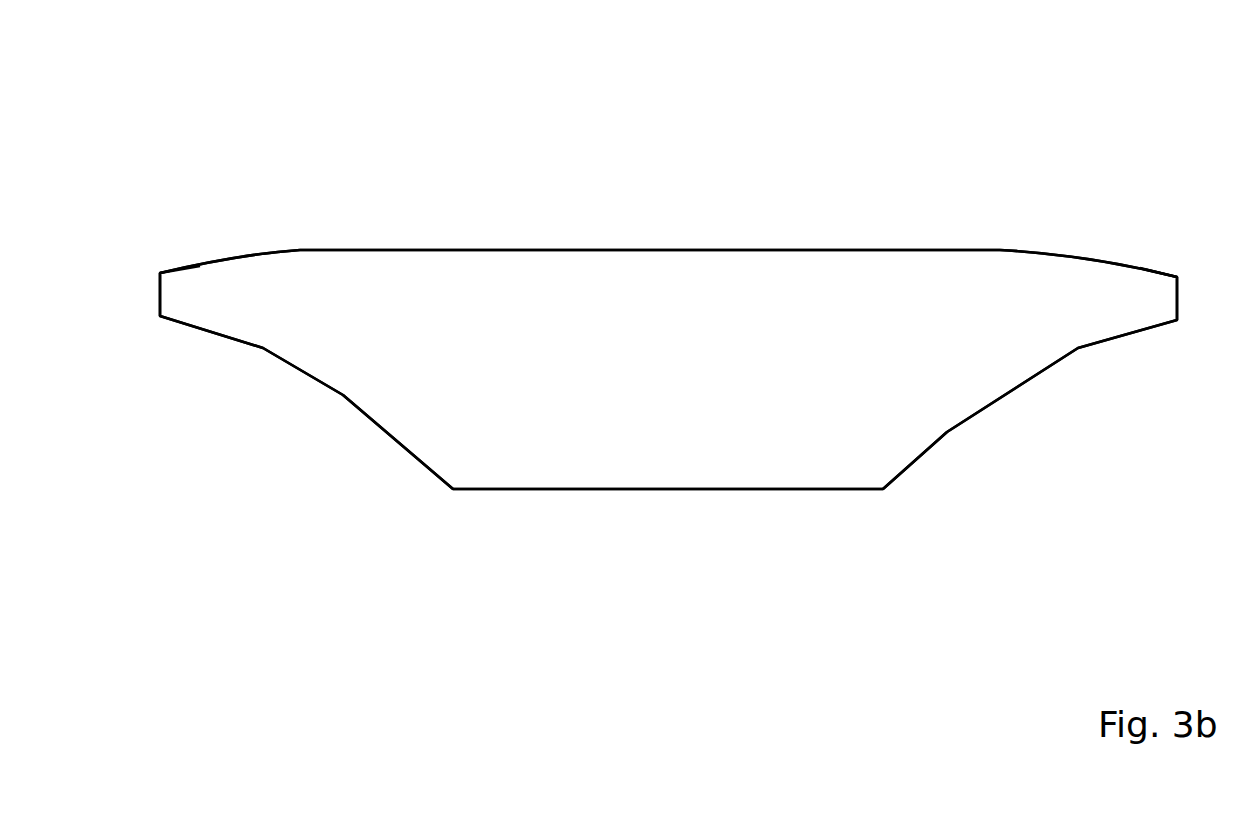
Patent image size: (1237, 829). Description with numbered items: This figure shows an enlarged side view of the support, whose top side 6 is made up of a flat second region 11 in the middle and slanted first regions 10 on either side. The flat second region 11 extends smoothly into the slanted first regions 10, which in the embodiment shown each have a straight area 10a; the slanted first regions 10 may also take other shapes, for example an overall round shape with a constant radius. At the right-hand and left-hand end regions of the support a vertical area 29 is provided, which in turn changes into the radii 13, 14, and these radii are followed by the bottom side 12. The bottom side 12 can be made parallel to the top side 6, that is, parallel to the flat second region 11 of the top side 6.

The top side 6 is at (559, 208).
The slanted first region 10 is at (213, 218).
The straight area 10a is at (178, 270).
The flat second region 11 is at (665, 250).
The bottom side 12 is at (633, 489).
The radius 13 is at (947, 432).
The radius 14 is at (343, 395).
The vertical area 29 is at (160, 293).